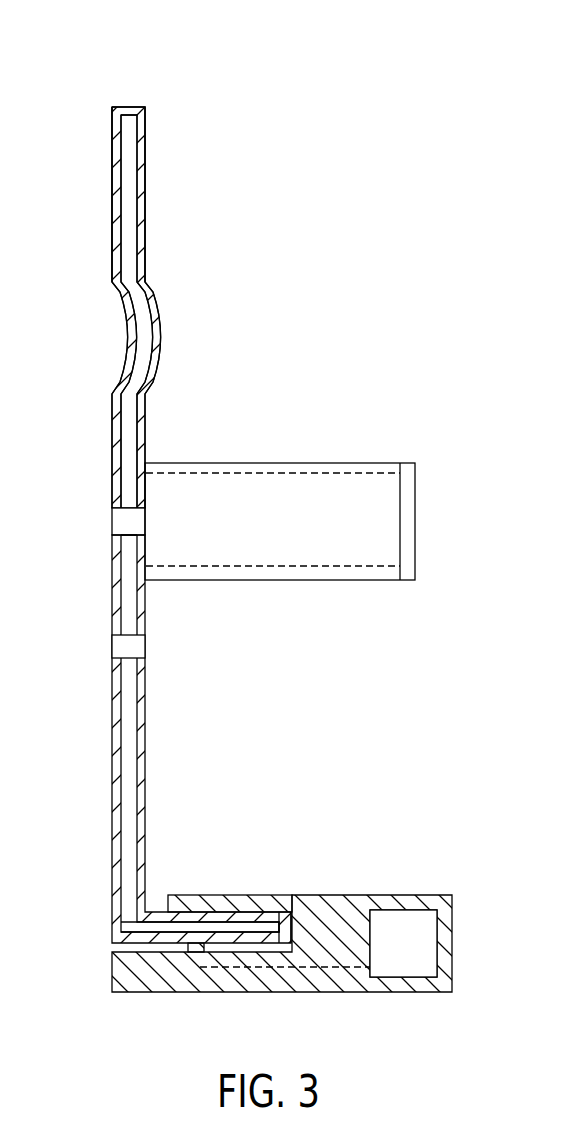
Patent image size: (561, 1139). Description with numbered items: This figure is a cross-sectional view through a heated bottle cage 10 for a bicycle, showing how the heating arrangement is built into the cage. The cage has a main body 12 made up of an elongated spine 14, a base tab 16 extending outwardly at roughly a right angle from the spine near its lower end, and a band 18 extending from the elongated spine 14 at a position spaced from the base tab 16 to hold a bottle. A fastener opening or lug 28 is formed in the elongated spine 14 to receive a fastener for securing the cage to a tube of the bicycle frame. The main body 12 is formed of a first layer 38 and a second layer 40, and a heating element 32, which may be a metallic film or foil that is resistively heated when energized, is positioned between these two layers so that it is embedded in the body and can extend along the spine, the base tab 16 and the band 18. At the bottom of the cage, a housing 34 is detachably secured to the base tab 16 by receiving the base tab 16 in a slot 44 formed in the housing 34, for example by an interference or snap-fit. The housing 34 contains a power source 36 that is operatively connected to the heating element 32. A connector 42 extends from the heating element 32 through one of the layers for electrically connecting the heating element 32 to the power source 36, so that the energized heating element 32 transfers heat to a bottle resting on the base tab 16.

The heated bottle cage 10 is at (60, 66).
The main body 12 is at (101, 207).
The elongated spine 14 is at (114, 584).
The base tab 16 is at (206, 907).
The band 18 is at (382, 581).
The fastener opening 28 is at (124, 524).
The heating element 32 is at (132, 143).
The housing 34 is at (443, 973).
The power source 36 is at (408, 915).
The first layer 38 is at (144, 200).
The second layer 40 is at (117, 251).
The connector 42 is at (191, 948).
The slot 44 is at (292, 930).